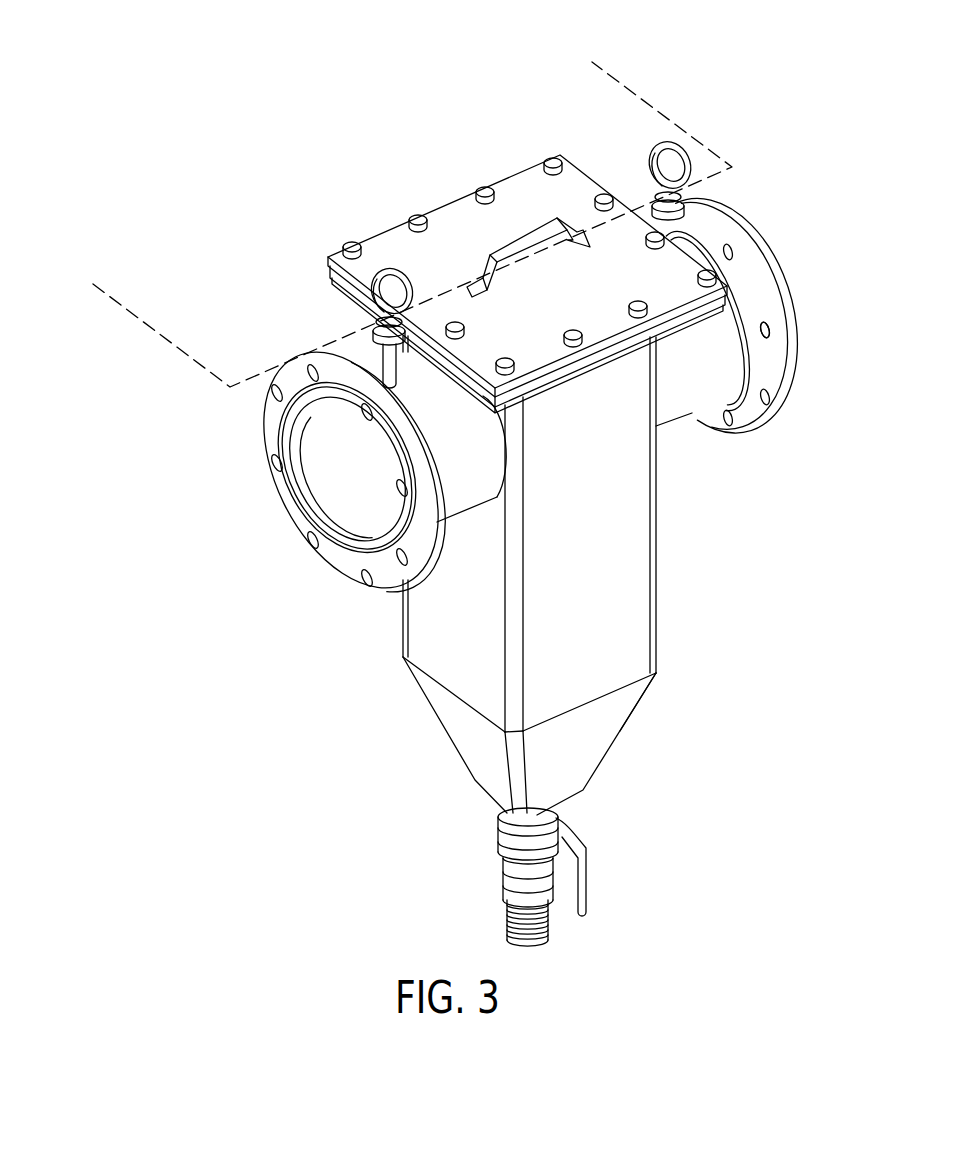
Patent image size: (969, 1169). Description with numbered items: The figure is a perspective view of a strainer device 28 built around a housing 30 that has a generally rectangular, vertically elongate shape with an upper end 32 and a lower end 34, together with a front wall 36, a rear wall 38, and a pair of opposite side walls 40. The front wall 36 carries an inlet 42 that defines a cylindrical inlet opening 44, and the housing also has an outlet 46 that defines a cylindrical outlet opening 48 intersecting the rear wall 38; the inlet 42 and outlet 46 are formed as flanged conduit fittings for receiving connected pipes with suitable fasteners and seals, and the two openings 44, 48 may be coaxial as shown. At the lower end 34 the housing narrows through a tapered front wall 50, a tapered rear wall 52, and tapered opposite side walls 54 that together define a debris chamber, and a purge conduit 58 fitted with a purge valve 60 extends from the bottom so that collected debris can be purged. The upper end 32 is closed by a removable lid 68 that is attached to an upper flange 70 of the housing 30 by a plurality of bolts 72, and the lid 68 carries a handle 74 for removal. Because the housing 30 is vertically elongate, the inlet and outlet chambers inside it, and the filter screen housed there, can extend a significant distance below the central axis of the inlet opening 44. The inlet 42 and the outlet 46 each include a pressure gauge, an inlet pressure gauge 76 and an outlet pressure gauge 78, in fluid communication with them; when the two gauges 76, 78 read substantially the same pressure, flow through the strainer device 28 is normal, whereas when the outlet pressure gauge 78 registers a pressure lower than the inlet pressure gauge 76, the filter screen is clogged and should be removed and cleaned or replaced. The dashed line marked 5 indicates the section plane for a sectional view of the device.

The section line 5- 5 is at (397, 208).
The strainer device 28 is at (252, 84).
The housing 30 is at (369, 623).
The upper end 32 is at (318, 312).
The lower end 34 is at (692, 756).
The front wall 36 is at (412, 645).
The rear wall 38 is at (657, 580).
The side walls 40 is at (641, 632).
The inlet 42 is at (235, 426).
The inlet opening 44 is at (312, 486).
The outlet 46 is at (775, 240).
The outlet opening 48 is at (757, 325).
The tapered front wall 50 is at (458, 733).
The tapered rear wall 52 is at (645, 695).
The tapered side walls 54 is at (588, 752).
The purge conduit 58 is at (508, 912).
The purge valve 60 is at (603, 830).
The removable lid 68 is at (521, 178).
The upper flange 70 is at (612, 355).
The bolts 72 is at (585, 345).
The handle 74 is at (535, 240).
The inlet pressure gauge 76 is at (402, 286).
The outlet pressure gauge 78 is at (660, 166).